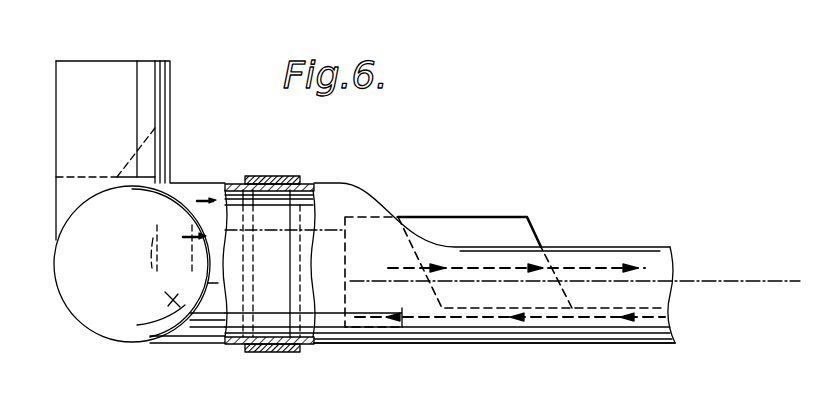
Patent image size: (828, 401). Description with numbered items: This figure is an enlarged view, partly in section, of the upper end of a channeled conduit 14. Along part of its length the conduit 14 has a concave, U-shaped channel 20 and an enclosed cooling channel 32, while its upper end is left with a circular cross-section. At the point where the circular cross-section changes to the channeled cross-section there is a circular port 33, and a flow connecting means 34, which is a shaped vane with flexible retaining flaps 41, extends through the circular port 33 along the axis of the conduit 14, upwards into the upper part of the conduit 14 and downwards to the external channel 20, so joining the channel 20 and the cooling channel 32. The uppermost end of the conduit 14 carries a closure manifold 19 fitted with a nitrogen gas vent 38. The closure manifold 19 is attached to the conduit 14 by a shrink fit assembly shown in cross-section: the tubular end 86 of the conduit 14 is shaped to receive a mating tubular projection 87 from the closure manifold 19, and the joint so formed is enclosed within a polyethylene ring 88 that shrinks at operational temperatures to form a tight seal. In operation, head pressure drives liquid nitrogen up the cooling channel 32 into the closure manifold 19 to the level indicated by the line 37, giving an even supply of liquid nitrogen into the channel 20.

The conduit 14 is at (430, 347).
The closure manifold 19 is at (112, 303).
The concave channel 20 is at (563, 252).
The cooling channel 32 is at (495, 322).
The circular port 33 is at (418, 255).
The flow connecting means 34 is at (475, 227).
The liquid nitrogen level line 37 is at (170, 122).
The nitrogen gas vent 38 is at (170, 61).
The flexible retaining flaps 41 is at (375, 322).
The tubular end 86 is at (308, 182).
The tubular projection 87 is at (233, 188).
The polyethylene ring 88 is at (280, 178).